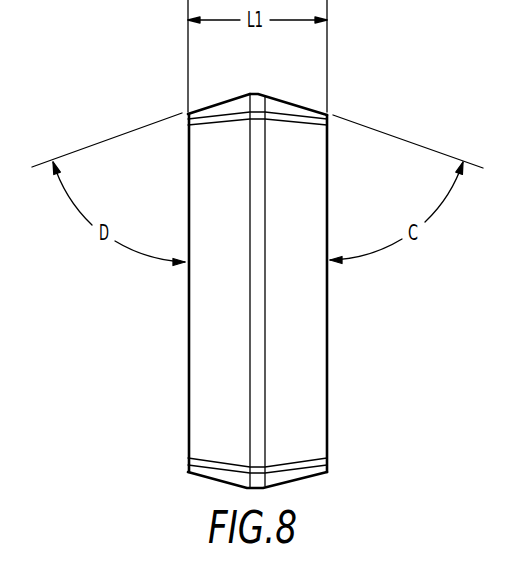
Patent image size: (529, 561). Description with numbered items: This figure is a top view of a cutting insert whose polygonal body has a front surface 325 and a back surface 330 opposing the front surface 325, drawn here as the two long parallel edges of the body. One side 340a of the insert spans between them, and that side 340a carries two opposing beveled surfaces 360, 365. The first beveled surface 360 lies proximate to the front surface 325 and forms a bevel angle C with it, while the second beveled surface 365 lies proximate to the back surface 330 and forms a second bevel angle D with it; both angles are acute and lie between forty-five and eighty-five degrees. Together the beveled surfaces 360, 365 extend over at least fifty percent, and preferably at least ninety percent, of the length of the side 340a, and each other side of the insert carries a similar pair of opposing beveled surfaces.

The front surface 325 is at (327, 341).
The back surface 330 is at (189, 328).
The side 340a is at (301, 77).
The first beveled surface 360 is at (296, 106).
The second beveled surface 365 is at (219, 104).